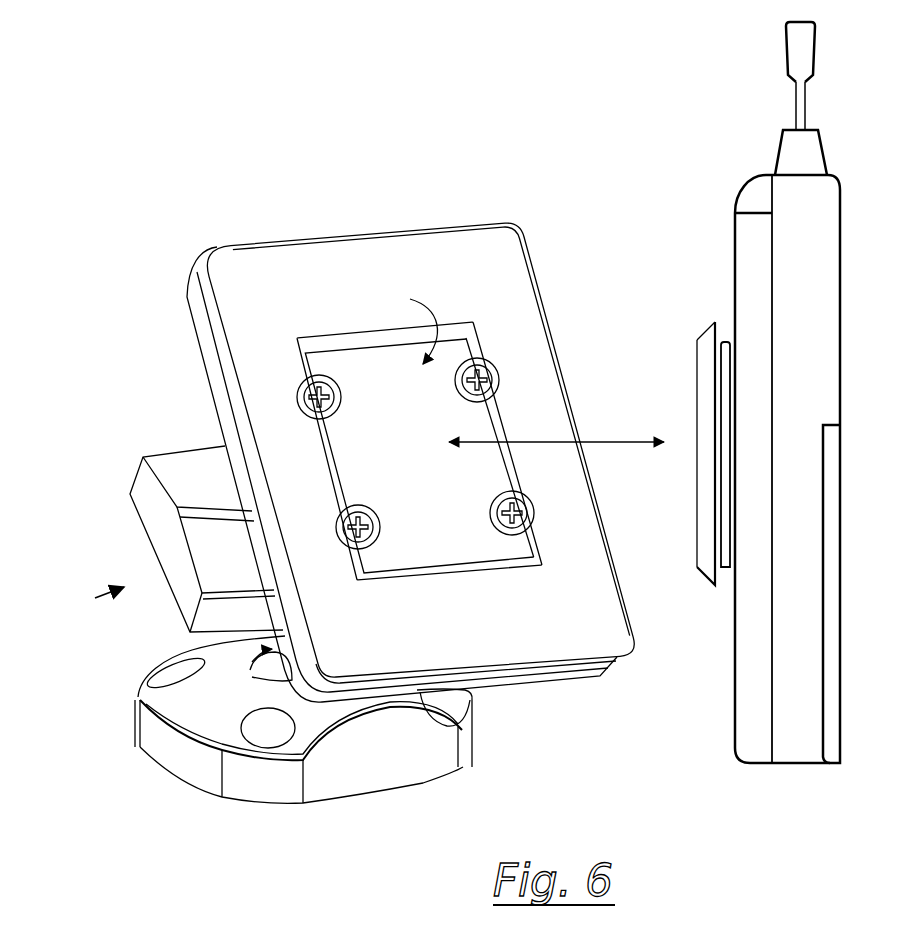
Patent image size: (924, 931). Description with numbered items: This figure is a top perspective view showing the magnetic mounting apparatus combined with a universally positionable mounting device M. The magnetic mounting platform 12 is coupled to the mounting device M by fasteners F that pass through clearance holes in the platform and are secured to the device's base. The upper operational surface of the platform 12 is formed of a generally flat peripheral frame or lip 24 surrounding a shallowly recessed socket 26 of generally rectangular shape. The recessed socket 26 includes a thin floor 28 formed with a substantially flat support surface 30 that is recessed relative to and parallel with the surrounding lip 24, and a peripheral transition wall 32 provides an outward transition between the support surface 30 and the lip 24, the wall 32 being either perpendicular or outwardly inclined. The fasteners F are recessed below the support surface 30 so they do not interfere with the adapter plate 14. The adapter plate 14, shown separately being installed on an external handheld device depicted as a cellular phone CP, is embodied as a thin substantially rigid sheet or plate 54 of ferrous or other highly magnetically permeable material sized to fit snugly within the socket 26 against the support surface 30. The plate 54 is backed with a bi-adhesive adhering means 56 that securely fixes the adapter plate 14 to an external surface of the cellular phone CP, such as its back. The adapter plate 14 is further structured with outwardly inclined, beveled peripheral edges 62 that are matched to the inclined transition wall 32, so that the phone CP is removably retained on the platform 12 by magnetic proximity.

The magnetic mounting platform 12 is at (393, 462).
The peripheral frame or lip 24 is at (467, 633).
The peripheral transition wall 32 is at (346, 337).
The floor 28 is at (446, 491).
The support surface 30 is at (467, 430).
The recessed socket 26 is at (406, 326).
The fasteners F is at (306, 390).
The universally positionable mounting device M is at (96, 601).
The cellular phone CP is at (846, 228).
The adapter plate 14 is at (697, 547).
The sheet or plate 54 is at (700, 414).
The beveled peripheral edges 62 is at (701, 326).
The adhering means 56 is at (722, 342).